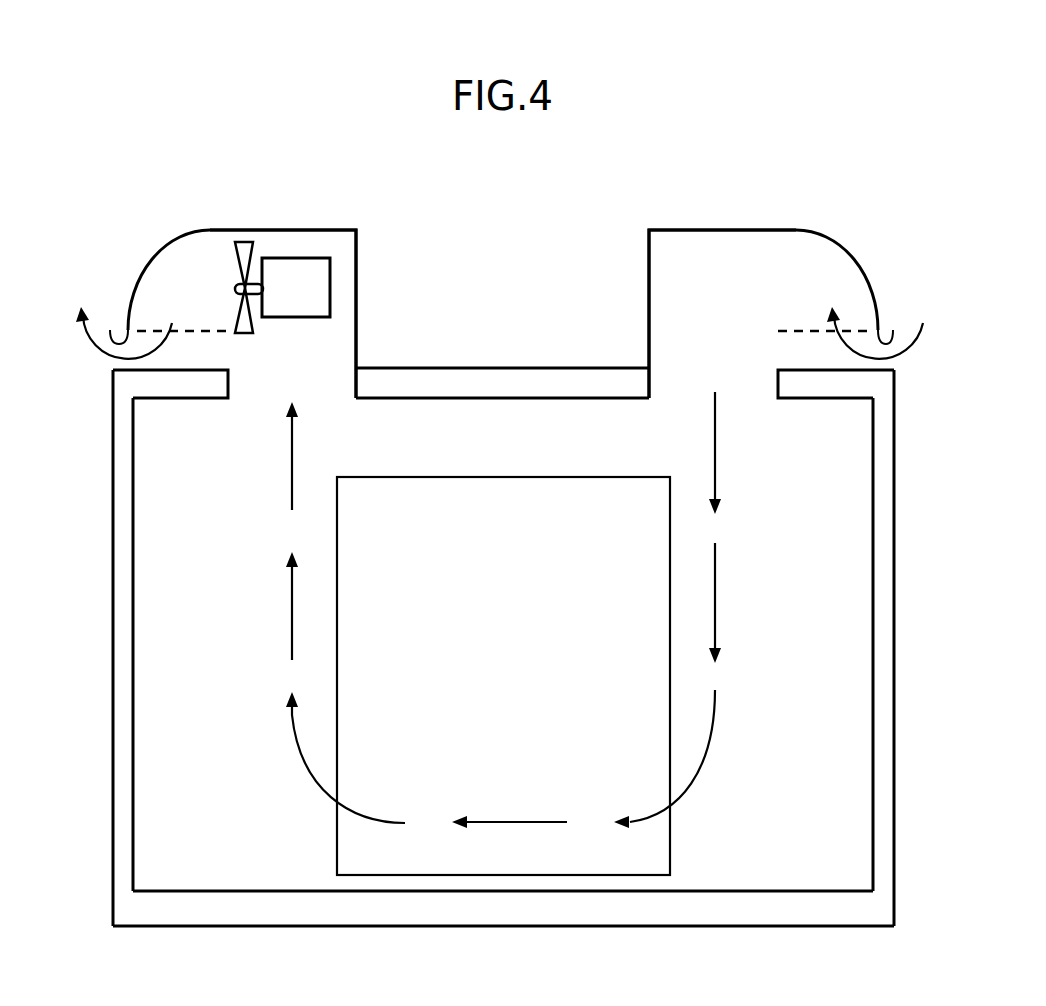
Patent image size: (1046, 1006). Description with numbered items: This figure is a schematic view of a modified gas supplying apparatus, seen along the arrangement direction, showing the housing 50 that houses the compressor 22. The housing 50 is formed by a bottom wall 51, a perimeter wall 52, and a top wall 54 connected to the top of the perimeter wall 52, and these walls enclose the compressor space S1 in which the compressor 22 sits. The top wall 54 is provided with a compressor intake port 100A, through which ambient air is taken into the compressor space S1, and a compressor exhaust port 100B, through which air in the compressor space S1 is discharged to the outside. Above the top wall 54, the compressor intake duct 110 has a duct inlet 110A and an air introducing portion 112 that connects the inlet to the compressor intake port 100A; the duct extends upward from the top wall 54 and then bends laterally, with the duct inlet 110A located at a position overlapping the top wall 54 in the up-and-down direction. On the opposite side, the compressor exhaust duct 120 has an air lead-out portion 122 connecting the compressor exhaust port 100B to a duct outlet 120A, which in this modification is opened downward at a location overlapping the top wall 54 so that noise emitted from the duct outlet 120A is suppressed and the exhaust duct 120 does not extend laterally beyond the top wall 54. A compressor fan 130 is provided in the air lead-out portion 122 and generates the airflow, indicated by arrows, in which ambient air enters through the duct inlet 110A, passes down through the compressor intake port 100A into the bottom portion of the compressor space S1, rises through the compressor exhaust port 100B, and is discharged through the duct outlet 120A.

The compressor 22 is at (553, 477).
The housing 50 is at (566, 356).
The bottom wall 51 is at (745, 918).
The perimeter wall 52 is at (113, 527).
The top wall 54 is at (479, 378).
The compressor intake duct 110 is at (738, 271).
The duct inlet 110A is at (893, 330).
The air introducing portion 112 is at (657, 230).
The compressor exhaust duct 120 is at (289, 269).
The duct outlet 120A is at (110, 330).
The air lead-out portion 122 is at (346, 230).
The compressor fan 130 is at (331, 262).
The compressor intake port 100A is at (695, 392).
The compressor exhaust port 100B is at (302, 392).
The compressor space S1 is at (487, 445).